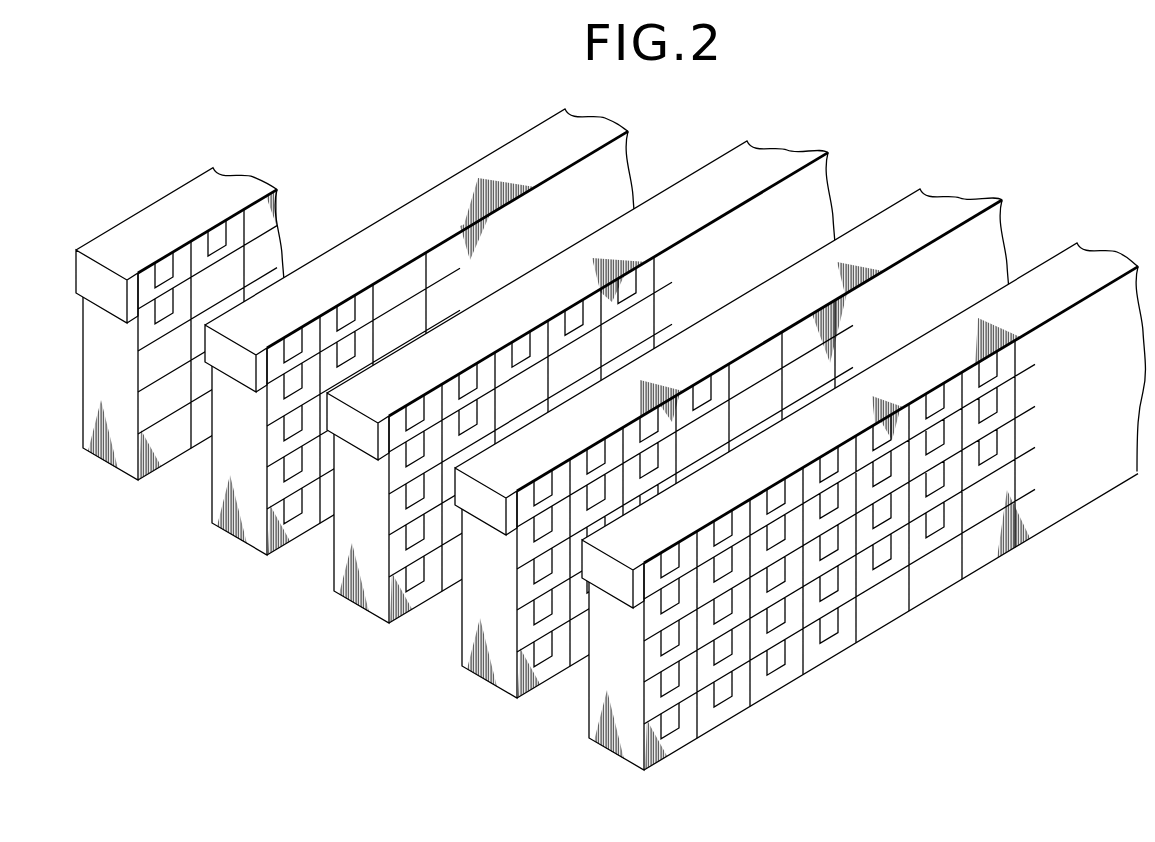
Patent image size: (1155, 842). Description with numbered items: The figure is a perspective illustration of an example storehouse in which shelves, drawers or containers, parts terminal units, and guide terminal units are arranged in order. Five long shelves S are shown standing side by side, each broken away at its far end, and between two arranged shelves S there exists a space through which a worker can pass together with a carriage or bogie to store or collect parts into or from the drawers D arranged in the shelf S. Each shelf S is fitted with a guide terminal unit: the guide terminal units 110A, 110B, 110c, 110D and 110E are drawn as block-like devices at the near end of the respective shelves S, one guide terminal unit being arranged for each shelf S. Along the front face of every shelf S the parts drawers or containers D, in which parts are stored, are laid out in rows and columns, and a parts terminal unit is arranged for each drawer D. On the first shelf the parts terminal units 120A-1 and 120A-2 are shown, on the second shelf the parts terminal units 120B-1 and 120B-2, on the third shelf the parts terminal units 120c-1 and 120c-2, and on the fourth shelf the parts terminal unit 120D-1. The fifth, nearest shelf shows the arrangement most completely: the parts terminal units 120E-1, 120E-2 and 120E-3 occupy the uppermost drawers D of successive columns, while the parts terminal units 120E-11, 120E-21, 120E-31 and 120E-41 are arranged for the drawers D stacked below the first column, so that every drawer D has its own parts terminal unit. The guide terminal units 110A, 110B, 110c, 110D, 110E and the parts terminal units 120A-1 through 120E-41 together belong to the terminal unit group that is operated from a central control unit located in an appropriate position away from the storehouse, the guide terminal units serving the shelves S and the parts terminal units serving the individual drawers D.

The guide terminal unit 110A is at (120, 278).
The guide terminal unit 110B is at (248, 353).
The guide terminal unit 110c is at (364, 419).
The guide terminal unit 110D is at (498, 494).
The guide terminal unit 110E is at (622, 571).
The parts terminal unit 120A-1 is at (193, 245).
The parts terminal unit 120A-2 is at (263, 207).
The parts terminal unit 120B-1 is at (291, 329).
The parts terminal unit 120B-2 is at (353, 295).
The parts terminal unit 120c-1 is at (436, 392).
The parts terminal unit 120c-2 is at (511, 346).
The parts terminal unit 120D-1 is at (573, 462).
The parts terminal unit 120E-1 is at (680, 541).
The parts terminal unit 120E-2 is at (740, 507).
The parts terminal unit 120E-3 is at (803, 470).
The parts terminal unit 120E-11 is at (592, 653).
The parts terminal unit 120E-21 is at (592, 687).
The parts terminal unit 120E-31 is at (732, 706).
The parts terminal unit 120E-41 is at (721, 742).
The drawer D is at (140, 353).
The shelf S is at (122, 462).